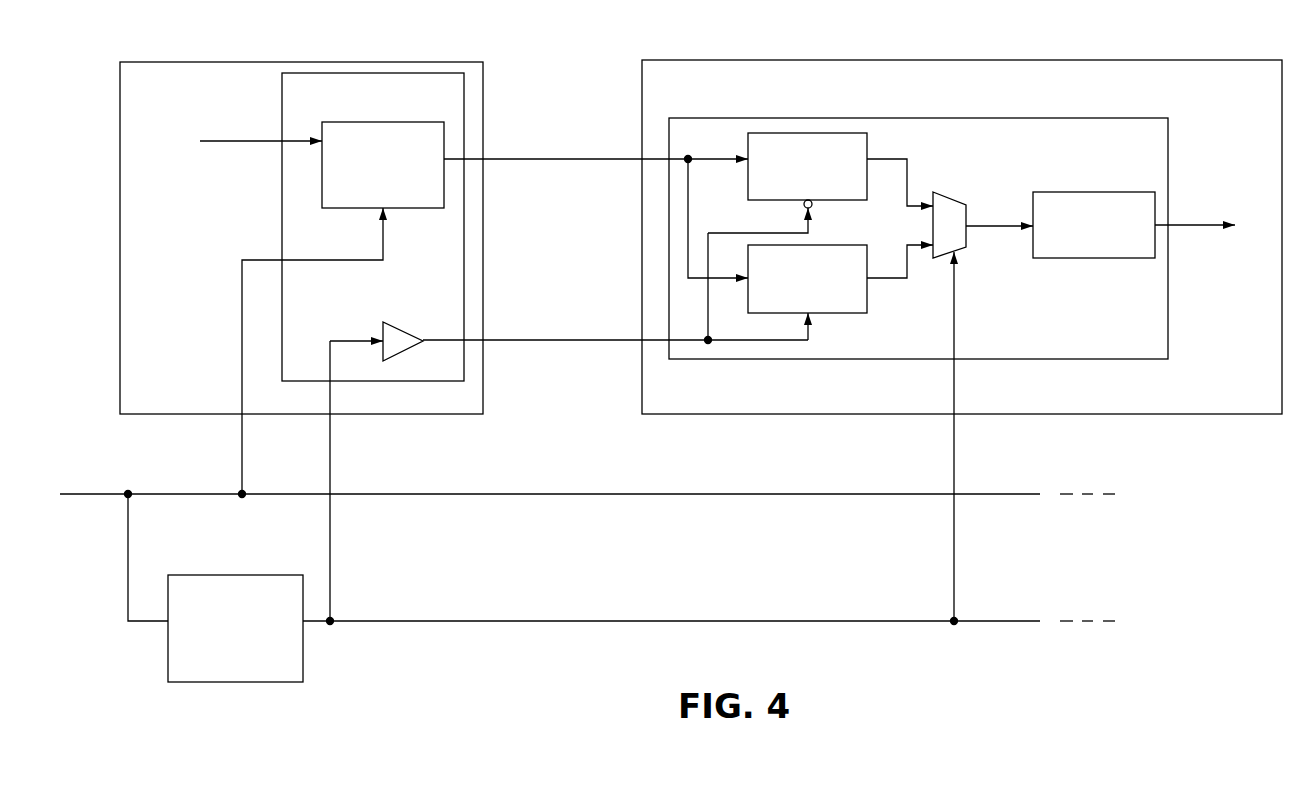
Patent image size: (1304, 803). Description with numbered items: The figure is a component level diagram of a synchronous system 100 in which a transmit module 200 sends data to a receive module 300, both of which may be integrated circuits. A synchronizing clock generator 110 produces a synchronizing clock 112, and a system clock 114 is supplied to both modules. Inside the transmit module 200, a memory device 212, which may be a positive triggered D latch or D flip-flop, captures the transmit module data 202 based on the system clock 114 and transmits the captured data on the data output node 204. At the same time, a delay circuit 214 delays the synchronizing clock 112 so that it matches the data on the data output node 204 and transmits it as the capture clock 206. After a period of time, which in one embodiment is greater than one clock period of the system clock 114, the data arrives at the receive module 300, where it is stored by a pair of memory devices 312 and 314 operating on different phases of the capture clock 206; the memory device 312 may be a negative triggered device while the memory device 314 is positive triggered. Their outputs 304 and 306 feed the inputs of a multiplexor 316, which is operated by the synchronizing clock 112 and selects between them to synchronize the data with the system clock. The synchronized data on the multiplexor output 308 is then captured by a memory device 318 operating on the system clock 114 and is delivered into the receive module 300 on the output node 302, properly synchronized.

The synchronous system 100 is at (1196, 557).
The synchronizing clock generator 110 is at (203, 575).
The synchronizing clock 112 is at (584, 618).
The system clock 114 is at (88, 494).
The transmit module 200 is at (161, 62).
The transmit module data 202 is at (242, 141).
The data output node 204 is at (589, 159).
The capture clock 206 is at (589, 340).
The memory device 212 is at (378, 122).
The delay circuit 214 is at (395, 324).
The receive module 300 is at (1060, 60).
The output node 302 is at (1200, 224).
The memory device output 304 is at (878, 159).
The memory device output 306 is at (878, 280).
The multiplexor output 308 is at (999, 228).
The memory device 312 is at (829, 201).
The memory device 314 is at (829, 314).
The multiplexor 316 is at (952, 193).
The memory device 318 is at (1094, 191).